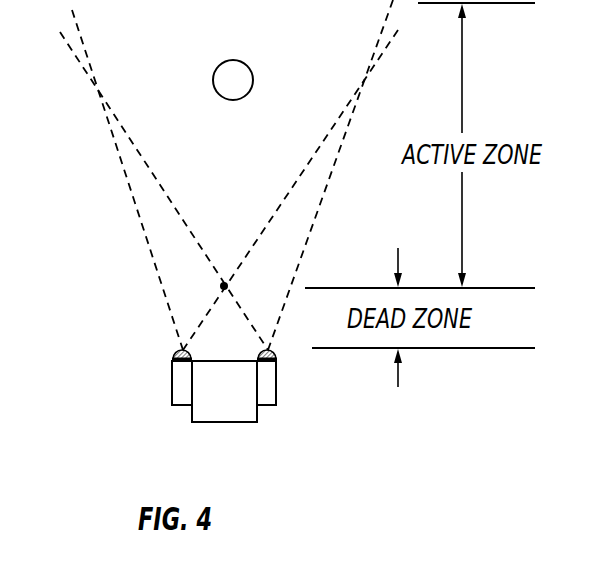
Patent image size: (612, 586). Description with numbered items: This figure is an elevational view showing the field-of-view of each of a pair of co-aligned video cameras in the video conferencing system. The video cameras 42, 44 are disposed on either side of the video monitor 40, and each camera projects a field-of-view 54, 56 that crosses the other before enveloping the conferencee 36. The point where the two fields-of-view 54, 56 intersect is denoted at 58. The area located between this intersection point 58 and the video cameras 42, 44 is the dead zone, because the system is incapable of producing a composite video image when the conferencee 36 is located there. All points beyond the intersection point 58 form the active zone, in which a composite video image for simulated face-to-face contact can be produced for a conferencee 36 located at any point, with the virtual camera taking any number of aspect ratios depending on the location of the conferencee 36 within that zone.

The conferencee 36 is at (254, 60).
The video monitor 40 is at (213, 415).
The video camera 42 is at (152, 393).
The video camera 44 is at (298, 393).
The field-of-view 54 is at (127, 180).
The field-of-view 56 is at (322, 203).
The intersection point 58 is at (223, 270).